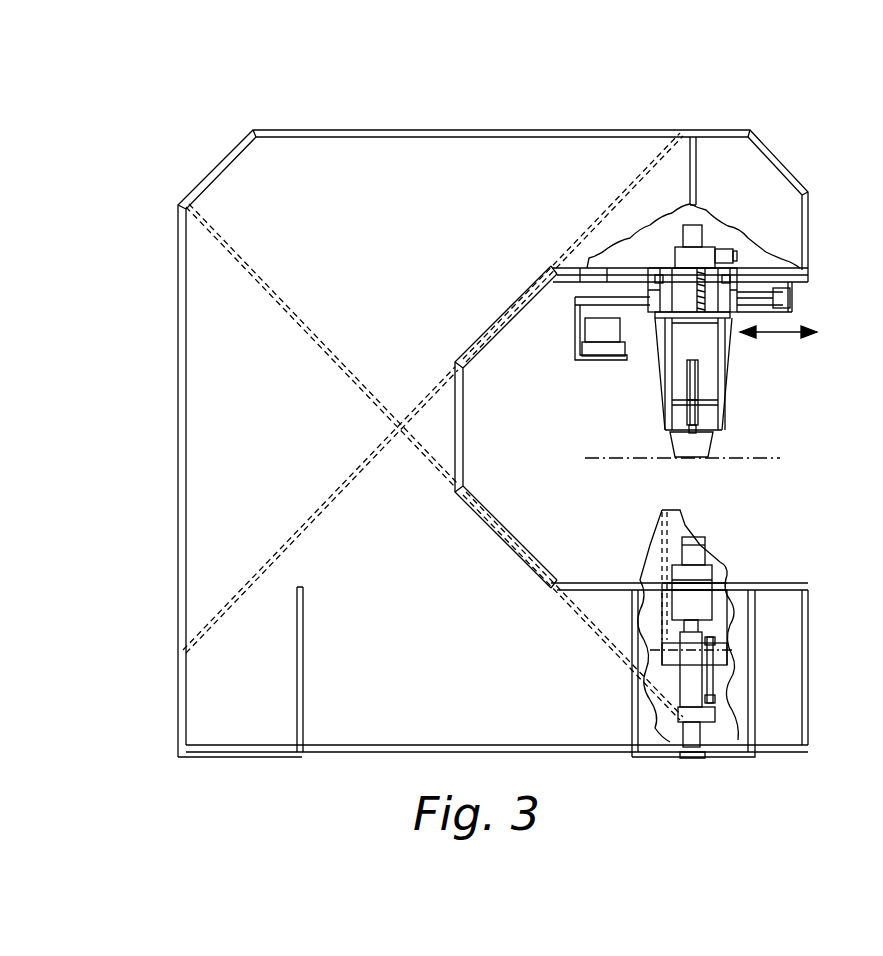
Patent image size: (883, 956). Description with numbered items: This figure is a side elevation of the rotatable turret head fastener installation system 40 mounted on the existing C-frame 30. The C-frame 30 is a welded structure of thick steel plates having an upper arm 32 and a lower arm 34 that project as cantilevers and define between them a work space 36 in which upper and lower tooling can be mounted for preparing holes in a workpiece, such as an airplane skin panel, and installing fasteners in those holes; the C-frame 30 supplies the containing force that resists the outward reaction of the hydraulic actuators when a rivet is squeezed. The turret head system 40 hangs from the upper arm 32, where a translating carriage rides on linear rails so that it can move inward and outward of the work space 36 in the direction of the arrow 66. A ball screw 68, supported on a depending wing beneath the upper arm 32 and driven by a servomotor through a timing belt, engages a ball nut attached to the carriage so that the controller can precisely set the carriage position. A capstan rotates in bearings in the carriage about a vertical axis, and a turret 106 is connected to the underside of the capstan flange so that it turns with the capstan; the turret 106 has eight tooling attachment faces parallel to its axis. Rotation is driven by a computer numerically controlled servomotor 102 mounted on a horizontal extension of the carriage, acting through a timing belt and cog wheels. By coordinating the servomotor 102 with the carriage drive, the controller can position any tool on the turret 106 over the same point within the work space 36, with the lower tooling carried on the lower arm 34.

The C-frame 30 is at (377, 101).
The upper arm 32 is at (753, 162).
The lower arm 34 is at (788, 648).
The work space 36 is at (737, 493).
The rotatable turret head fastener installation system 40 is at (735, 360).
The arrow 66 is at (780, 333).
The ball screw 68 is at (758, 298).
The servomotor 102 is at (603, 347).
The turret 106 is at (660, 380).